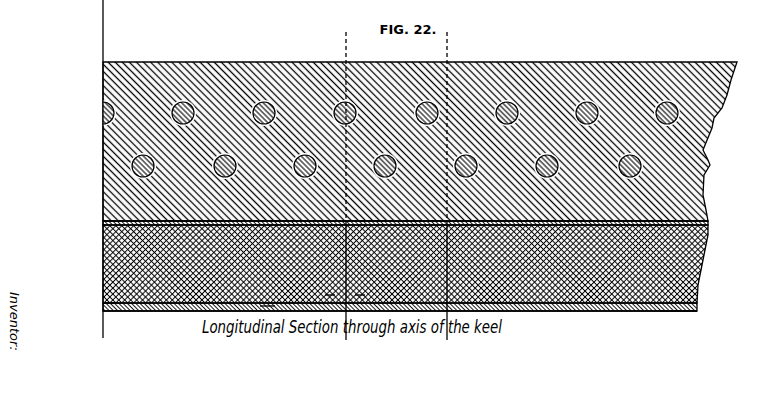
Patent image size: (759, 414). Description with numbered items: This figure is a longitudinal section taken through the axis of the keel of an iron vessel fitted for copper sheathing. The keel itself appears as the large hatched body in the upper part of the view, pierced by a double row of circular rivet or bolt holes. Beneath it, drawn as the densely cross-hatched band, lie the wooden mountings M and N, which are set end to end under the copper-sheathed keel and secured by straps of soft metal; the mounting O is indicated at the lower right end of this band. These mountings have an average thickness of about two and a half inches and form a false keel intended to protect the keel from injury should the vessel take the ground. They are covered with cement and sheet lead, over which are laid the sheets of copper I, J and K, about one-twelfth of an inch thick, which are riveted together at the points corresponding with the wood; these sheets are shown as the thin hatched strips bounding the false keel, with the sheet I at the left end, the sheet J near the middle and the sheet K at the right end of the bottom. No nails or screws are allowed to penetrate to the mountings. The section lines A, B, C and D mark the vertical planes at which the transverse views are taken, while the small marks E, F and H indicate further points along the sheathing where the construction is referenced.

The wooden mounting M is at (103, 223).
The wooden mounting N is at (708, 224).
The sheet of copper I is at (103, 308).
The wooden mounting O is at (699, 301).
The sheet of copper K is at (690, 311).
The section line A is at (346, 58).
The section line B is at (346, 311).
The section line C is at (447, 58).
The section line D is at (447, 311).
The keel detail E is at (352, 303).
The keel detail F is at (340, 303).
The sheet of copper J is at (268, 304).
The keel detail H is at (108, 303).